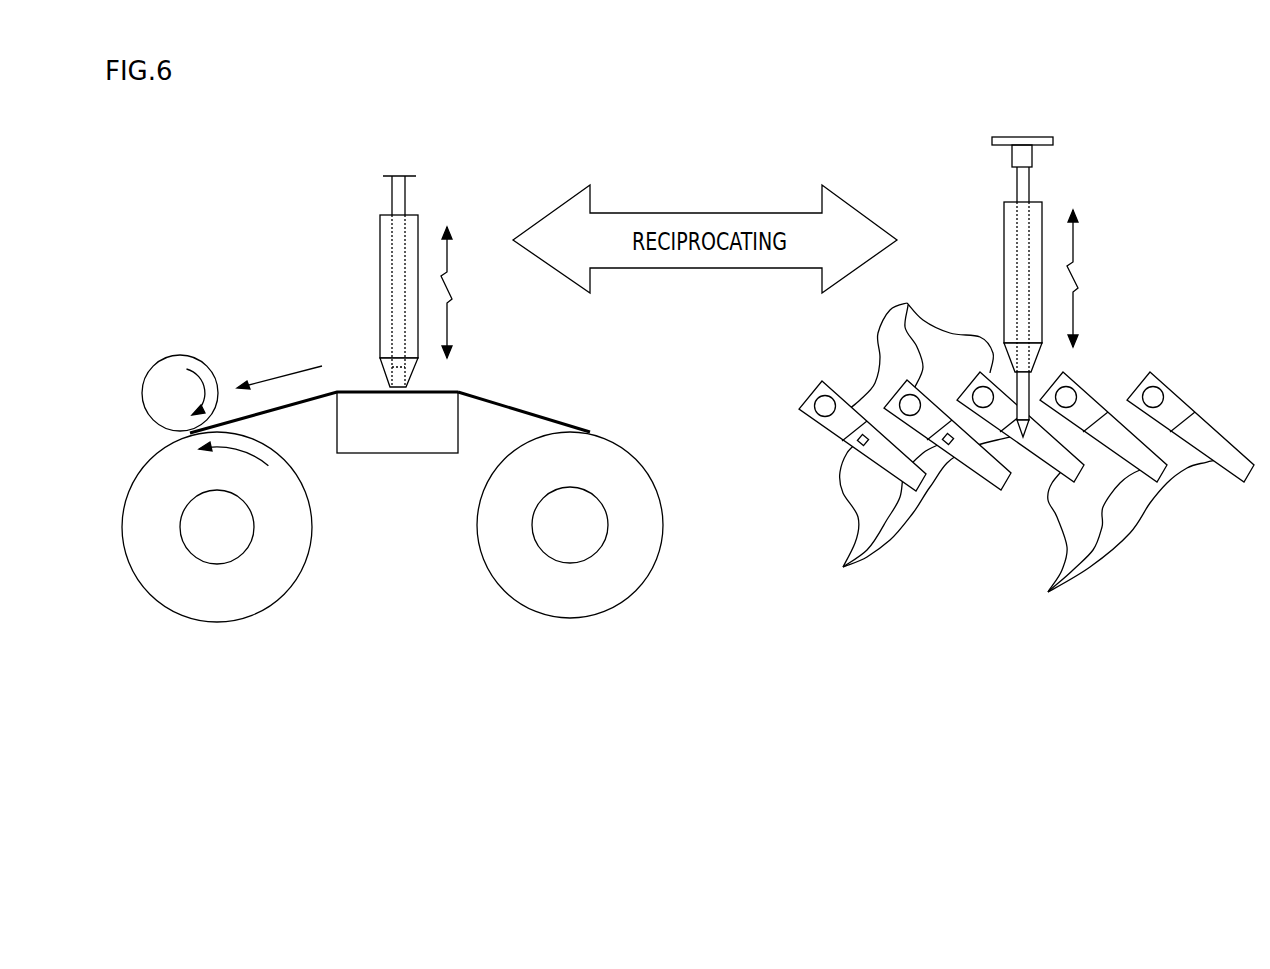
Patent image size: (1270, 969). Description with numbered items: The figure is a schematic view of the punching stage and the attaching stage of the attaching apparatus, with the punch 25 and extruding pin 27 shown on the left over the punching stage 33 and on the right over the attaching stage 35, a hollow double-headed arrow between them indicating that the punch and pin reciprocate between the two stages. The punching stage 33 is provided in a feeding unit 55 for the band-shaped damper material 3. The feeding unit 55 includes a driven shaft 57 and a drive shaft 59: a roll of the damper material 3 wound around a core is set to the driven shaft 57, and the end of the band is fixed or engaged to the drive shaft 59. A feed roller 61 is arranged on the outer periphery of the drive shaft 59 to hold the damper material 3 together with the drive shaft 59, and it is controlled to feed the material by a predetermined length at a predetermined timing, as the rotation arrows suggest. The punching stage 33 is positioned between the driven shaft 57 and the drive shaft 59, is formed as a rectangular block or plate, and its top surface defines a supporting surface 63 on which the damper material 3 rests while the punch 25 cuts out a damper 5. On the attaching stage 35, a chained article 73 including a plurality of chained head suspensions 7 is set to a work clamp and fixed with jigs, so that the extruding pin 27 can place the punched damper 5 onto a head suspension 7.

The damper material 3 is at (500, 403).
The damper 5 is at (1026, 485).
The head suspension 7 is at (1033, 447).
The punch 25 is at (413, 238).
The extruding pin 27 is at (398, 197).
The punching stage 33 is at (407, 428).
The attaching stage 35 is at (1026, 491).
The feeding unit 55 is at (392, 509).
The driven shaft 57 is at (570, 525).
The drive shaft 59 is at (217, 527).
The feed roller 61 is at (173, 367).
The supporting surface 63 is at (368, 388).
The chained article 73 is at (1125, 350).